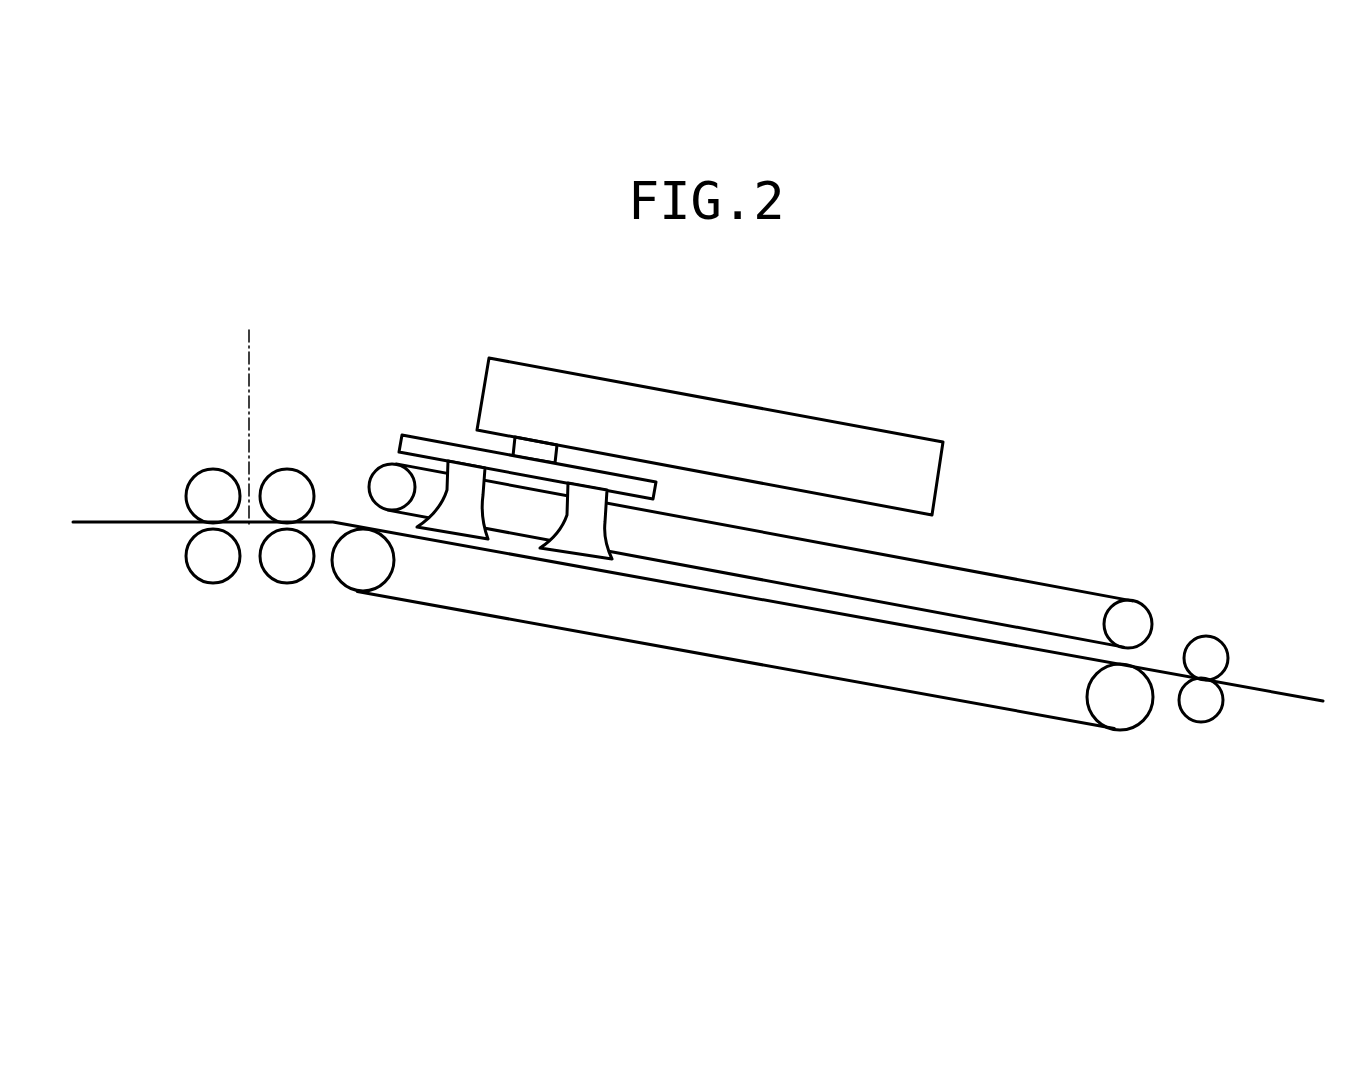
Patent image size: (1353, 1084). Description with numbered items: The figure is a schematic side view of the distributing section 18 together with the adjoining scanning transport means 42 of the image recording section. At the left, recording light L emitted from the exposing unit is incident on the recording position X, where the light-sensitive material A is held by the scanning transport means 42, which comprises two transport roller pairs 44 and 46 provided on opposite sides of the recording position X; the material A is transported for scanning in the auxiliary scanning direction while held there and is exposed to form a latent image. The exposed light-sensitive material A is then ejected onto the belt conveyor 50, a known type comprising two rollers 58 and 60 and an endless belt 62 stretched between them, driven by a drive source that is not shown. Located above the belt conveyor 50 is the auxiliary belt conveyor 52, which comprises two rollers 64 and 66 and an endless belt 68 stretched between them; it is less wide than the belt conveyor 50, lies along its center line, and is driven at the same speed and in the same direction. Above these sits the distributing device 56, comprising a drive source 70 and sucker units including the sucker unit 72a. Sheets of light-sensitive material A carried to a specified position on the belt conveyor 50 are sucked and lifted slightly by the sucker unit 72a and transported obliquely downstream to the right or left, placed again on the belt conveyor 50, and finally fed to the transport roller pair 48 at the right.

The distributing section 18 is at (998, 390).
The scanning transport means 42 is at (261, 502).
The transport roller pair 44 is at (210, 567).
The transport roller pair 46 is at (295, 490).
The transport roller pair 48 is at (1208, 657).
The belt conveyor 50 is at (752, 692).
The auxiliary belt conveyor 52 is at (791, 472).
The distributing device 56 is at (615, 366).
The roller 58 is at (360, 572).
The roller 60 is at (1118, 703).
The endless belt 62 is at (777, 670).
The roller 64 is at (382, 478).
The roller 66 is at (1137, 613).
The endless belt 68 is at (943, 563).
The drive source 70 is at (763, 438).
The sucker unit 72a is at (518, 537).
The recording light L is at (245, 398).
The recording position X is at (251, 527).
The light-sensitive material A is at (1270, 697).